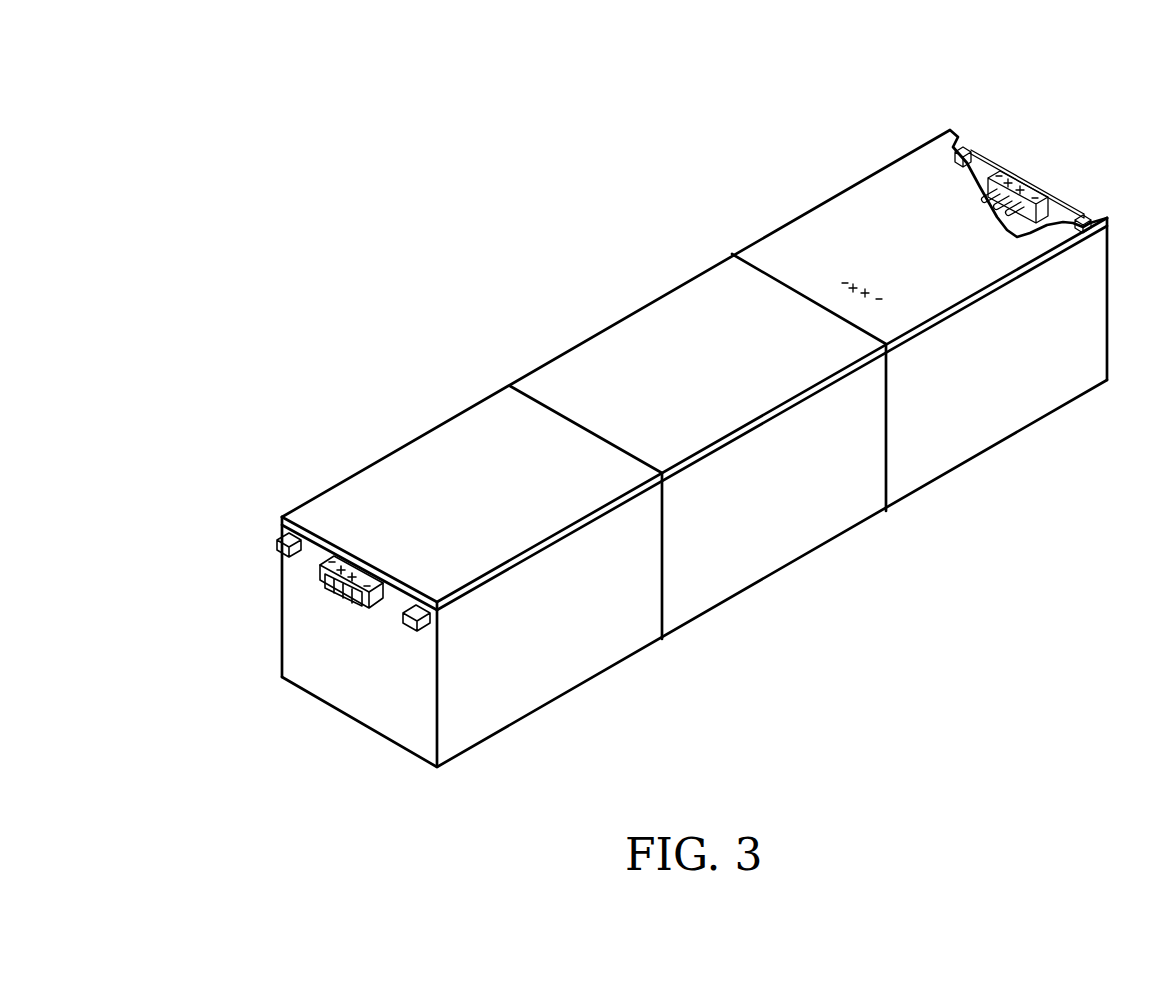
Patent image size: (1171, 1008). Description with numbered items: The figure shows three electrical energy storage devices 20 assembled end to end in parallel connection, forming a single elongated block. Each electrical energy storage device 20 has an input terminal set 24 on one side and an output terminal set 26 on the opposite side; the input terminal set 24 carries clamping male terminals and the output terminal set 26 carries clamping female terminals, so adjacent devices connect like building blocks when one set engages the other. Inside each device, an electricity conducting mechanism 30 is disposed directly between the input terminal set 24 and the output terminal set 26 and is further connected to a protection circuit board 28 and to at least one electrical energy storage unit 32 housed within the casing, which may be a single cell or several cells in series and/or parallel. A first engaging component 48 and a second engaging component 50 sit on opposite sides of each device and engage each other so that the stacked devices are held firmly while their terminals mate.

The electrical energy storage device 20 is at (804, 124).
The input terminal set 24 is at (1020, 181).
The output terminal set 26 is at (320, 578).
The protection circuit board 28 is at (804, 513).
The electricity conducting mechanism 30 is at (917, 237).
The electrical energy storage unit 32 is at (510, 650).
The first engaging component 48 is at (283, 537).
The second engaging component 50 is at (972, 144).